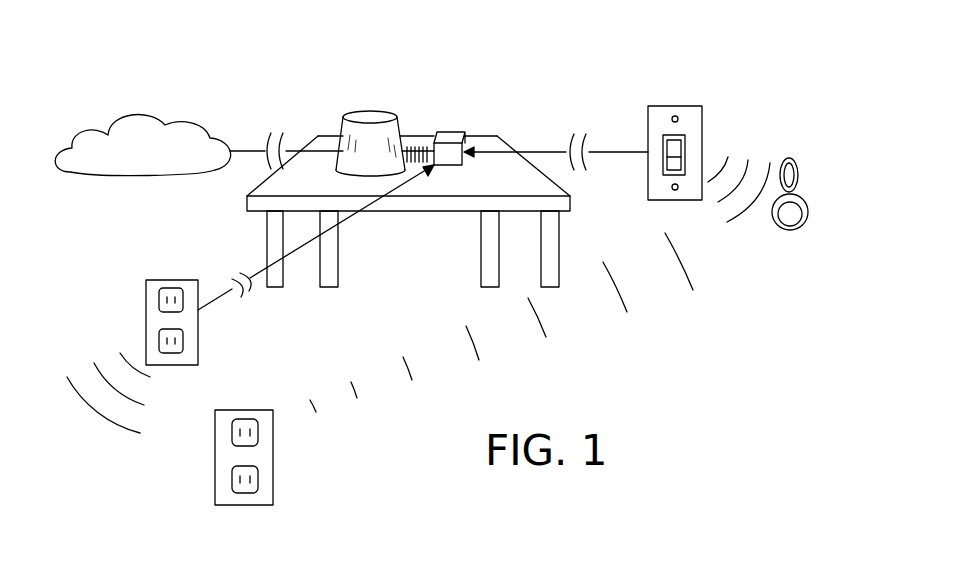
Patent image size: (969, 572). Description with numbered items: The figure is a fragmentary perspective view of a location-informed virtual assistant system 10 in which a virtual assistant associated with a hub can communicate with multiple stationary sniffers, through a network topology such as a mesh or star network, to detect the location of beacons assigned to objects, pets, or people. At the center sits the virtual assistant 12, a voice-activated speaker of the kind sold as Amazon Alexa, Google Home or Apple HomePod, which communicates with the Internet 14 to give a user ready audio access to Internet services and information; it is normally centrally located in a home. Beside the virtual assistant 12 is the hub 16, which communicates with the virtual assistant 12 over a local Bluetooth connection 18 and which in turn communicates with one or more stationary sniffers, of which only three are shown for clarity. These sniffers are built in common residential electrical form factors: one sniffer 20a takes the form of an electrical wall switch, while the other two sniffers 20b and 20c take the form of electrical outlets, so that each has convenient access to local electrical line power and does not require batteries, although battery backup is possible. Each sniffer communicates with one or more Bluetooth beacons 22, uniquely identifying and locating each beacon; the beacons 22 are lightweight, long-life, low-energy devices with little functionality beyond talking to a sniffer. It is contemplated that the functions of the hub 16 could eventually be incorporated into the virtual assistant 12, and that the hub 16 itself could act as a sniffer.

The location-informed virtual assistant system 10 is at (688, 48).
The virtual assistant 12 is at (370, 116).
The Internet 14 is at (151, 161).
The hub 16 is at (461, 126).
The local Bluetooth connection 18 is at (418, 144).
The stationary sniffer 20a is at (682, 130).
The stationary sniffer 20b is at (178, 280).
The stationary sniffer 20c is at (250, 410).
The Bluetooth beacon 22 is at (803, 200).